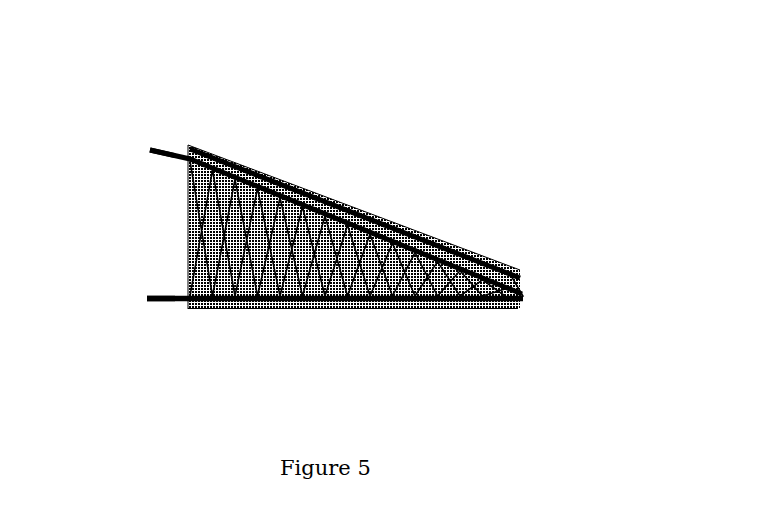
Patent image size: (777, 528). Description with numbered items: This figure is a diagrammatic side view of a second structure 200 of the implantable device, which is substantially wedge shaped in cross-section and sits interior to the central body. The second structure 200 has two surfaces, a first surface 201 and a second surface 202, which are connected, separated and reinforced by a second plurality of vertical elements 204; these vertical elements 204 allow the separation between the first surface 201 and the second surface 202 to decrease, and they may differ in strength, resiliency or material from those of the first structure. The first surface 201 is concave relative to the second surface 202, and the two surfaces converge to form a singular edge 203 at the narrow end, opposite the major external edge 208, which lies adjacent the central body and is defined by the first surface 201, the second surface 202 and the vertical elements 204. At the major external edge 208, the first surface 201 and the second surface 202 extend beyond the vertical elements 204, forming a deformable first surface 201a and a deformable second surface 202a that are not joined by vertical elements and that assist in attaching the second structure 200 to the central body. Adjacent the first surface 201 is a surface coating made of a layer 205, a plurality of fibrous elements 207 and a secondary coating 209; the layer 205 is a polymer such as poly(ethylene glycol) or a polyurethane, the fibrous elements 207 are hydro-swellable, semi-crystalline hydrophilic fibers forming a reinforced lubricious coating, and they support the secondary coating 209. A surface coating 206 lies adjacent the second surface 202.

The second structure 200 is at (373, 217).
The first surface 201 is at (217, 153).
The deformable first surface 201a is at (167, 145).
The second surface 202 is at (303, 303).
The deformable second surface 202a is at (177, 303).
The singular edge 203 is at (567, 298).
The second plurality of vertical elements 204 is at (198, 245).
The layer 205 is at (277, 172).
The surface coating 206 is at (413, 303).
The plurality of fibrous elements 207 is at (342, 197).
The major external edge 208 is at (187, 180).
The secondary coating 209 is at (397, 220).